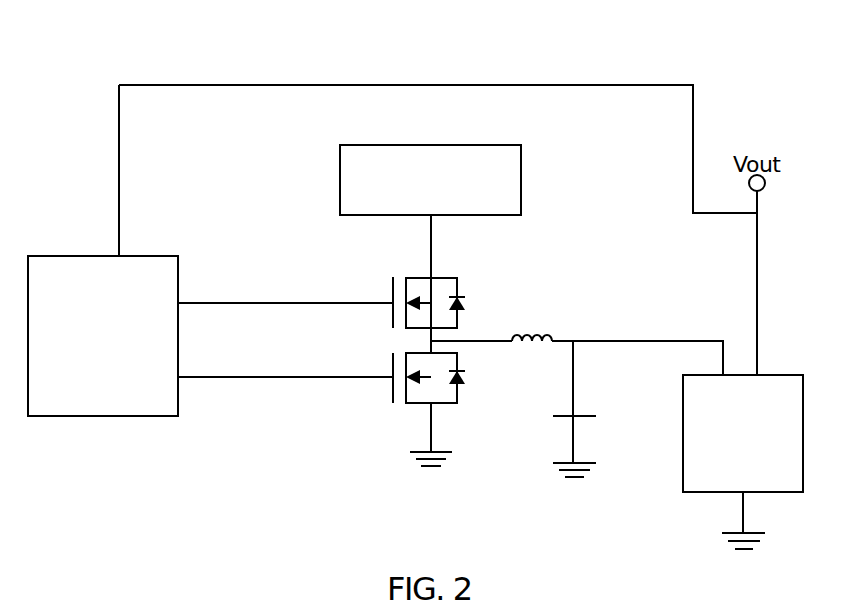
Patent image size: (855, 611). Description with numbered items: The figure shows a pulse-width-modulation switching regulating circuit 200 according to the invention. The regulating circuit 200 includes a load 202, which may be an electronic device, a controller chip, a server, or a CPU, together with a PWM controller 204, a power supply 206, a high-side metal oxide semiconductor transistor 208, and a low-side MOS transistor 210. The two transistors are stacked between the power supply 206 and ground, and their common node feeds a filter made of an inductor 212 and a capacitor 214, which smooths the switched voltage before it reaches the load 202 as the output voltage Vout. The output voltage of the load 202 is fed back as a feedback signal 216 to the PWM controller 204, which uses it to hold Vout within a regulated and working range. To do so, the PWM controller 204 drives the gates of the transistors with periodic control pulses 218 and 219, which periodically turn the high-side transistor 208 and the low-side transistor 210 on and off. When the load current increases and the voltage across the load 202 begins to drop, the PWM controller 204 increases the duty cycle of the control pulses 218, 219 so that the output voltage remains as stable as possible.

The pulse-width-modulation switching regulating circuit 200 is at (93, 72).
The load 202 is at (725, 452).
The PWM controller 204 is at (121, 356).
The power supply 206 is at (448, 204).
The high-side MOS transistor 208 is at (406, 278).
The low-side MOS transistor 210 is at (406, 403).
The inductor 212 is at (525, 330).
The capacitor 214 is at (585, 421).
The feedback signal 216 is at (318, 85).
The periodic control pulse 218 is at (225, 377).
The periodic control pulse 219 is at (225, 303).